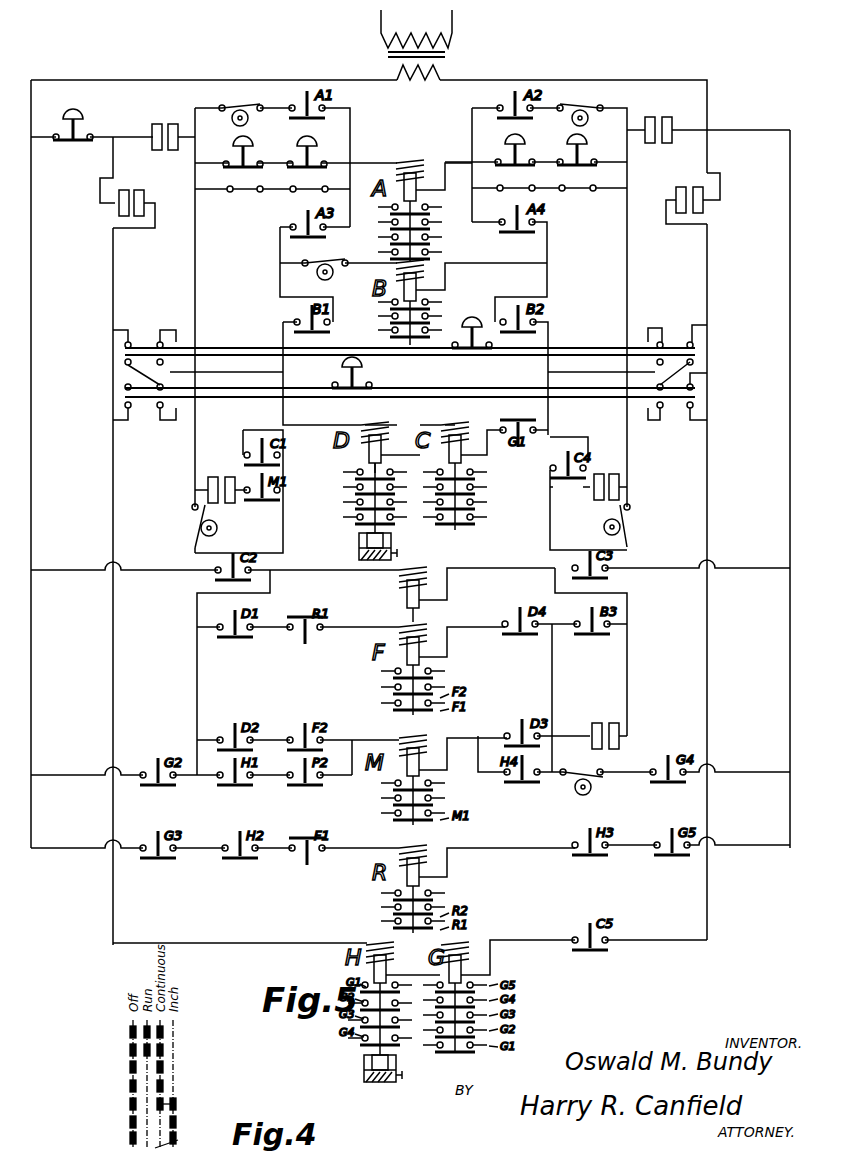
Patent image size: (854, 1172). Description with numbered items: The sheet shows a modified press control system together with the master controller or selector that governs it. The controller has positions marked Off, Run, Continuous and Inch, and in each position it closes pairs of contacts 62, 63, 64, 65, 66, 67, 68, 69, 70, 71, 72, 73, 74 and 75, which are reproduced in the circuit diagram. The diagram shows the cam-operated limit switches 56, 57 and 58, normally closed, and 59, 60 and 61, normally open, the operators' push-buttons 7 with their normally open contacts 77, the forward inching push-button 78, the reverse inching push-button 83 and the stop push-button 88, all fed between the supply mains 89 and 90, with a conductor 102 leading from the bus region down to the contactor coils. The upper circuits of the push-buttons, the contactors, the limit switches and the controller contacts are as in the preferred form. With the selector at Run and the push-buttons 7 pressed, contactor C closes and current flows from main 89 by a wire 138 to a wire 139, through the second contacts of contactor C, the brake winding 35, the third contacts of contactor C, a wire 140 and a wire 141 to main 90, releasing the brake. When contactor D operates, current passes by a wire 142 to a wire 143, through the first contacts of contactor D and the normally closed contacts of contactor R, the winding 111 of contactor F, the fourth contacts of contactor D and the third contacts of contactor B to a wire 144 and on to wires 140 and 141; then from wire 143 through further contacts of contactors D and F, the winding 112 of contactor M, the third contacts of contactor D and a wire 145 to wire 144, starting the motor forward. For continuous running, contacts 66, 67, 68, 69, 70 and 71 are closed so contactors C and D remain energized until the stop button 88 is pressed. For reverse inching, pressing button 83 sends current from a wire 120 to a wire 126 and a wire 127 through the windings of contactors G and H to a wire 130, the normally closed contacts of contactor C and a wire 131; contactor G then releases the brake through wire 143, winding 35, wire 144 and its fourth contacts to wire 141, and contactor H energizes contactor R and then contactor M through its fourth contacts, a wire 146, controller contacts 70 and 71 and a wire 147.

In FIG. 5, the operators' push-button 7 is at (289, 150).
In FIG. 5, the valve winding 35 is at (400, 590).
In FIG. 5, the cam-operated limit switch 56 is at (242, 108).
In FIG. 5, the cam-operated limit switch 57 is at (584, 105).
In FIG. 5, the cam-operated limit switch 58 is at (323, 258).
In FIG. 5, the cam-operated limit switch 59 is at (194, 523).
In FIG. 5, the cam-operated limit switch 60 is at (630, 525).
In FIG. 5, the cam-operated limit switch 61 is at (584, 770).
In FIG. 5, the controller contact 62 is at (156, 152).
In FIG. 4, the controller contact 62 is at (128, 1033).
In FIG. 5, the controller contact 63 is at (173, 152).
In FIG. 4, the controller contact 63 is at (175, 1022).
In FIG. 5, the controller contact 64 is at (648, 145).
In FIG. 4, the controller contact 64 is at (128, 1051).
In FIG. 5, the controller contact 65 is at (666, 145).
In FIG. 4, the controller contact 65 is at (175, 1042).
In FIG. 5, the controller contact 66 is at (206, 482).
In FIG. 4, the controller contact 66 is at (128, 1068).
In FIG. 5, the controller contact 67 is at (233, 475).
In FIG. 4, the controller contact 67 is at (164, 1062).
In FIG. 5, the controller contact 68 is at (600, 479).
In FIG. 4, the controller contact 68 is at (128, 1087).
In FIG. 5, the controller contact 69 is at (619, 479).
In FIG. 4, the controller contact 69 is at (164, 1081).
In FIG. 5, the controller contact 70 is at (593, 728).
In FIG. 4, the controller contact 70 is at (128, 1105).
In FIG. 5, the controller contact 71 is at (618, 727).
In FIG. 4, the controller contact 71 is at (177, 1100).
In FIG. 5, the controller contact 72 is at (124, 195).
In FIG. 4, the controller contact 72 is at (128, 1123).
In FIG. 5, the controller contact 73 is at (138, 193).
In FIG. 4, the controller contact 73 is at (177, 1118).
In FIG. 5, the controller contact 74 is at (686, 197).
In FIG. 4, the controller contact 74 is at (128, 1139).
In FIG. 5, the controller contact 75 is at (700, 190).
In FIG. 4, the controller contact 75 is at (177, 1134).
In FIG. 5, the normally open contacts 77 is at (238, 192).
In FIG. 5, the inching control push-button 78 is at (478, 336).
In FIG. 5, the inching push-button 83 is at (362, 376).
In FIG. 5, the stop push-button 88 is at (82, 134).
In FIG. 5, the supply main 89 is at (66, 80).
In FIG. 5, the supply main 90 is at (708, 92).
In FIG. 5, the conductor 102 is at (318, 418).
In FIG. 5, the winding of contactor F 111 is at (424, 635).
In FIG. 5, the winding of contactor M 112 is at (424, 746).
In FIG. 5, the wire 120 is at (114, 290).
In FIG. 5, the wire 126 is at (114, 493).
In FIG. 5, the wire 127 is at (302, 942).
In FIG. 5, the wire 130 is at (525, 940).
In FIG. 5, the wire 131 is at (708, 475).
In FIG. 5, the wire 138 is at (32, 414).
In FIG. 5, the wire 139 is at (44, 575).
In FIG. 5, the wire 140 is at (660, 578).
In FIG. 5, the wire 141 is at (790, 537).
In FIG. 5, the wire 142 is at (242, 596).
In FIG. 5, the wire 143 is at (195, 616).
In FIG. 5, the wire 144 is at (630, 610).
In FIG. 5, the wire 145 is at (553, 686).
In FIG. 5, the wire 146 is at (553, 765).
In FIG. 5, the wire 147 is at (630, 748).